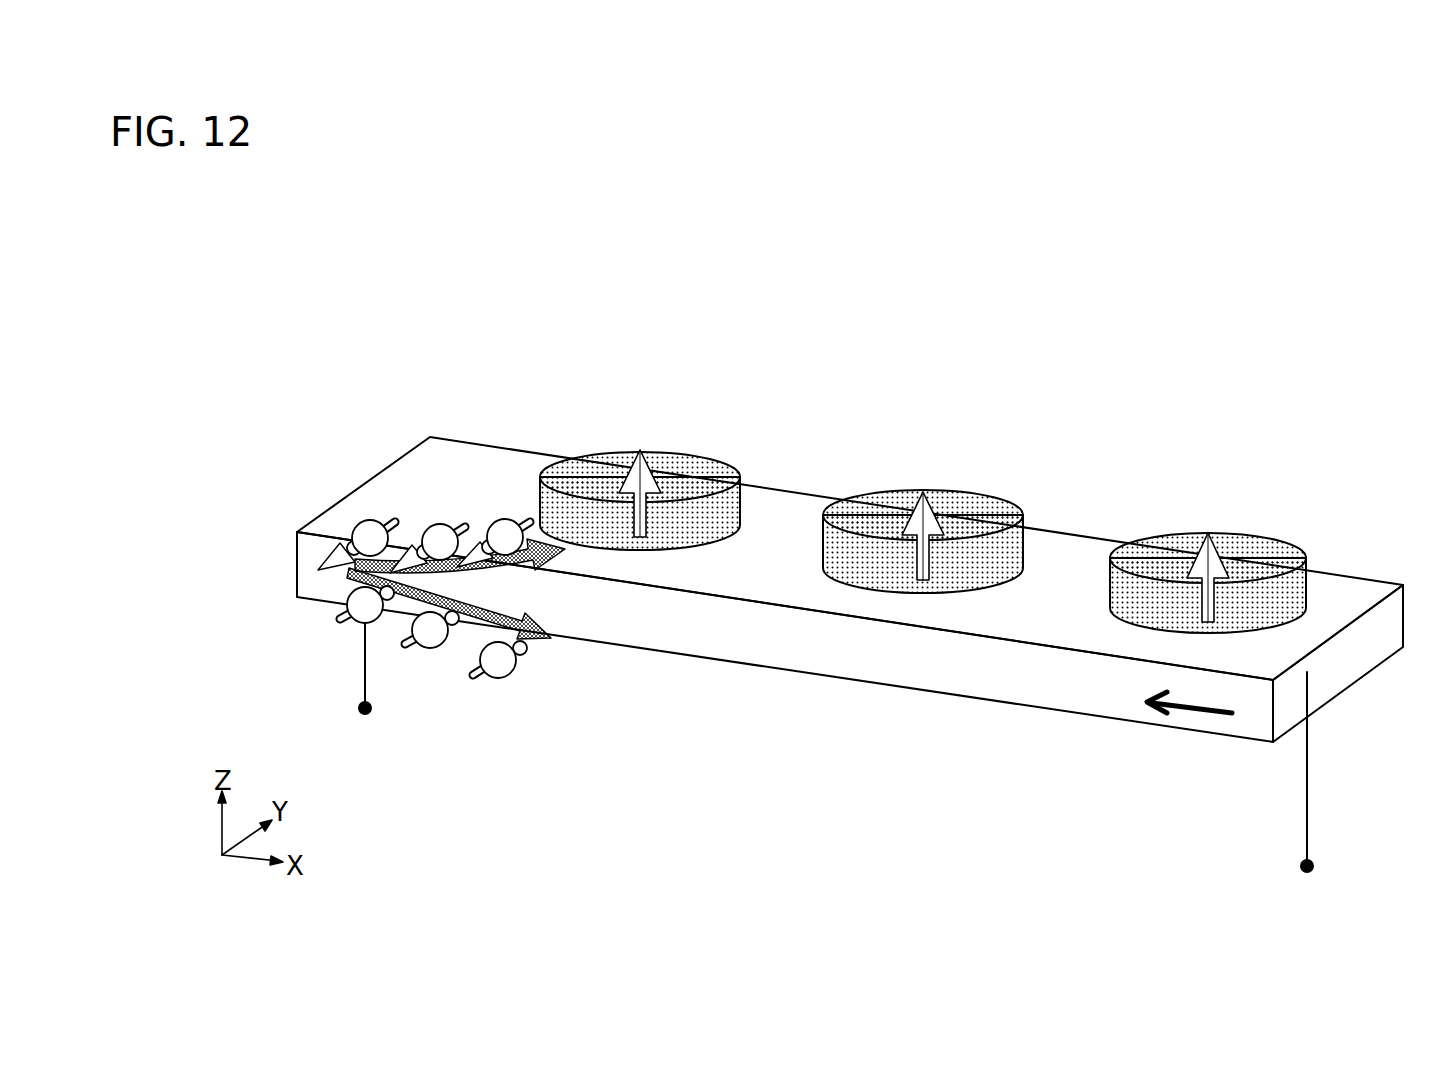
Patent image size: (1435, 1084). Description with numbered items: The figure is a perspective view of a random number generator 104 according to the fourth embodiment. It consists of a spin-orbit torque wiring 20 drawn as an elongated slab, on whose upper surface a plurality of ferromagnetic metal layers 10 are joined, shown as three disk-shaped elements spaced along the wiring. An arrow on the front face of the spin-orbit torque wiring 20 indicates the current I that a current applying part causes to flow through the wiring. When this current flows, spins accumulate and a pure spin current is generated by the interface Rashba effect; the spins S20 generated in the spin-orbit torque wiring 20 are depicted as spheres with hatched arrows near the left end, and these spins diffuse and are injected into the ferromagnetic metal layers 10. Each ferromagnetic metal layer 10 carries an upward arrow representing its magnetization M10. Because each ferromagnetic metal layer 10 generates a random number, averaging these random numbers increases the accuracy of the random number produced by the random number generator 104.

The random number generator 104 is at (1138, 350).
The spin-orbit torque wiring 20 is at (447, 483).
The ferromagnetic metal layer 10 is at (733, 517).
The magnetization of ferromagnetic layer M10 is at (652, 470).
The spins S20 is at (362, 523).
The current flowing through wiring I is at (767, 643).